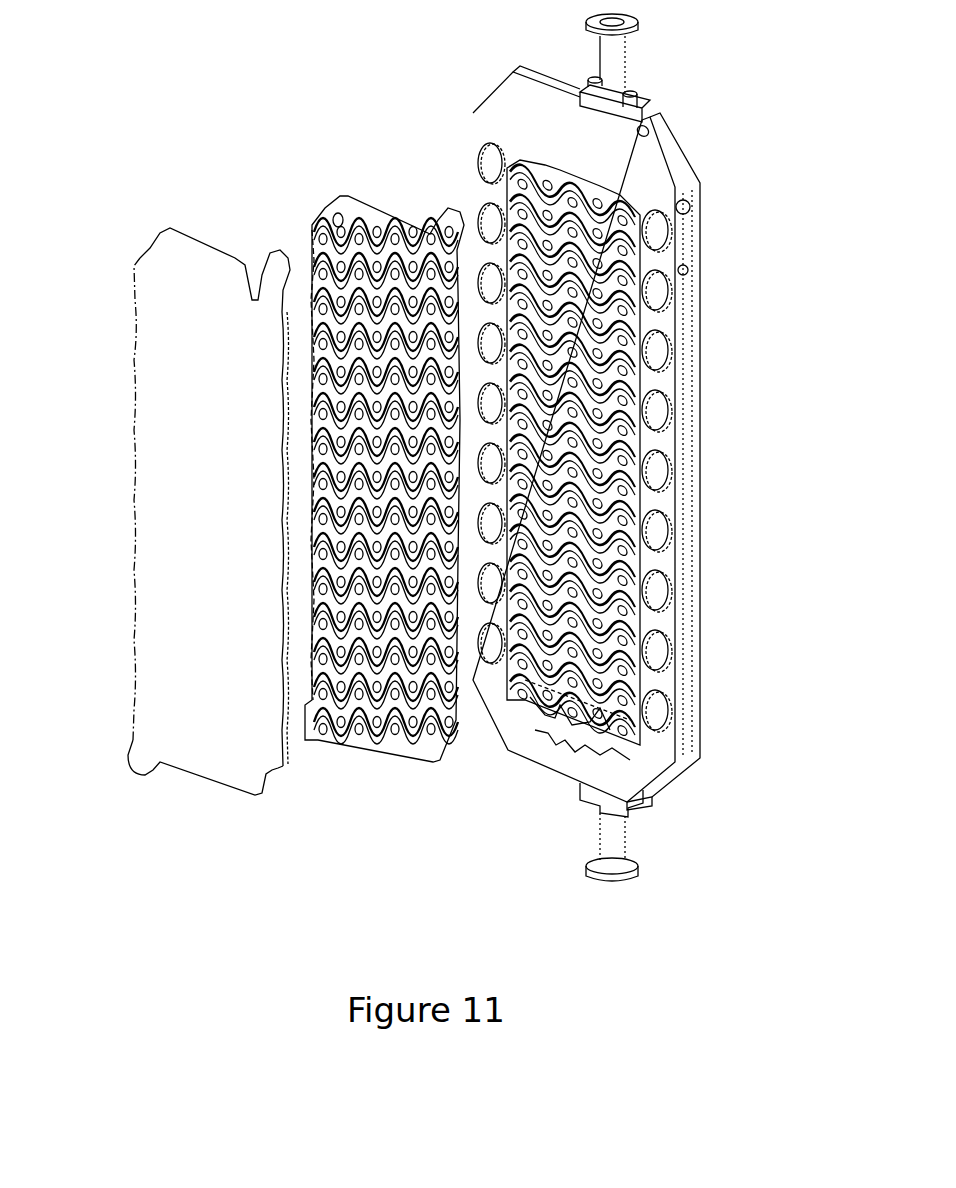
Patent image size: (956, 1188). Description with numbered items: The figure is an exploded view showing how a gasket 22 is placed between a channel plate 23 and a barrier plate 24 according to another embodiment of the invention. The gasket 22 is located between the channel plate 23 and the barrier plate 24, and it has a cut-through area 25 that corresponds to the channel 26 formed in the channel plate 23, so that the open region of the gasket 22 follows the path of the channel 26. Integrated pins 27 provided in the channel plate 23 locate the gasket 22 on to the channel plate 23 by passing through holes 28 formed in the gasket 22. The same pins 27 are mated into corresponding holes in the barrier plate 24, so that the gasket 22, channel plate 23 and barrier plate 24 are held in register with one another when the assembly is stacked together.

The gasket 22 is at (376, 511).
The channel plate 23 is at (646, 447).
The barrier plate 24 is at (218, 660).
The cut-through area 25 is at (408, 624).
The channel 26 is at (612, 492).
The integrated pins 27 is at (620, 272).
The holes 28 is at (336, 218).